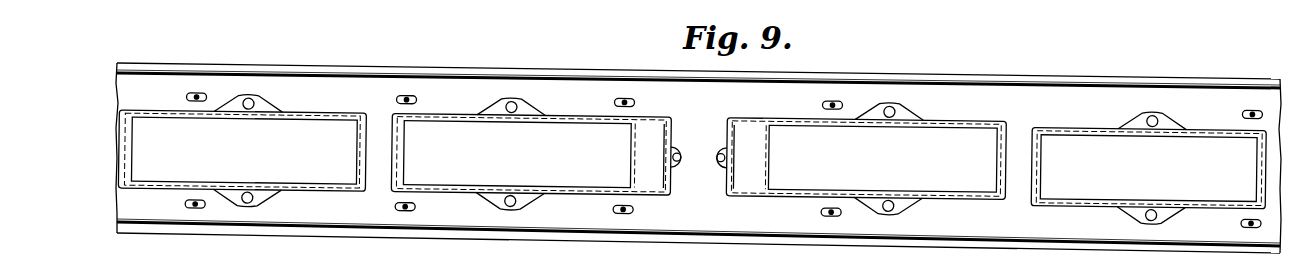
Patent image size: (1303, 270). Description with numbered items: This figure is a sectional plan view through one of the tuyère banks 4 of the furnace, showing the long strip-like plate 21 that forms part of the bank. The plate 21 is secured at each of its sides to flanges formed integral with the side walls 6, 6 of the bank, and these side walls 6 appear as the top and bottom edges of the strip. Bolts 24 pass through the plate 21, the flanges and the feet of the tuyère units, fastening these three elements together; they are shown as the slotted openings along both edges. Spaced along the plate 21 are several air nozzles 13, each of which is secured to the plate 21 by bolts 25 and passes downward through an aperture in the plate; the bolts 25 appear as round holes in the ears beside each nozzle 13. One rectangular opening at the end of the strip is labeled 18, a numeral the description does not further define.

The tuyère bank 4 is at (698, 152).
The side wall 6 is at (497, 68).
The air nozzle 13 is at (828, 161).
The end panel frame section 18 is at (242, 150).
The plate 21 is at (700, 158).
The bolt 24 is at (205, 95).
The bolt 25 is at (254, 100).